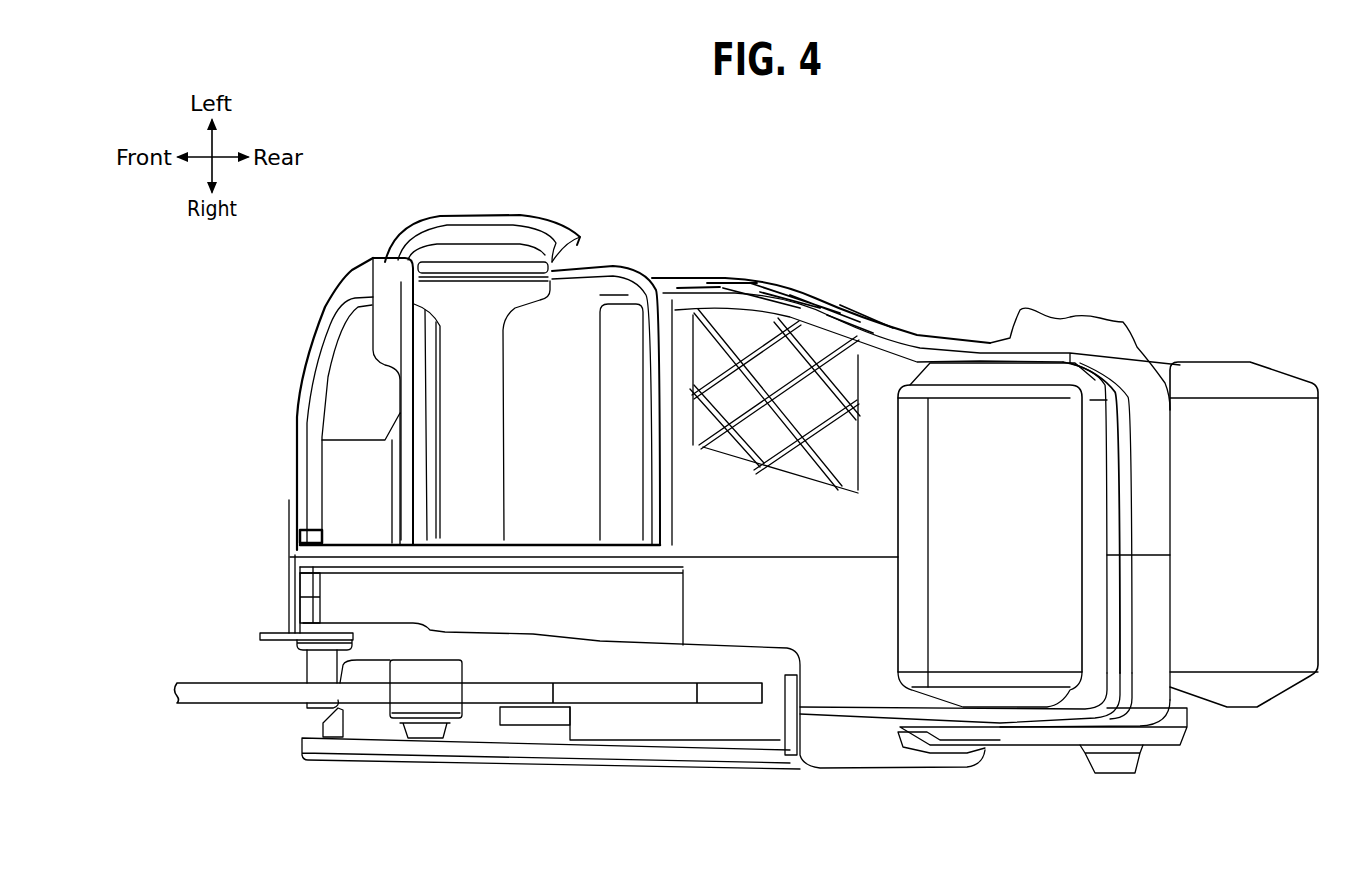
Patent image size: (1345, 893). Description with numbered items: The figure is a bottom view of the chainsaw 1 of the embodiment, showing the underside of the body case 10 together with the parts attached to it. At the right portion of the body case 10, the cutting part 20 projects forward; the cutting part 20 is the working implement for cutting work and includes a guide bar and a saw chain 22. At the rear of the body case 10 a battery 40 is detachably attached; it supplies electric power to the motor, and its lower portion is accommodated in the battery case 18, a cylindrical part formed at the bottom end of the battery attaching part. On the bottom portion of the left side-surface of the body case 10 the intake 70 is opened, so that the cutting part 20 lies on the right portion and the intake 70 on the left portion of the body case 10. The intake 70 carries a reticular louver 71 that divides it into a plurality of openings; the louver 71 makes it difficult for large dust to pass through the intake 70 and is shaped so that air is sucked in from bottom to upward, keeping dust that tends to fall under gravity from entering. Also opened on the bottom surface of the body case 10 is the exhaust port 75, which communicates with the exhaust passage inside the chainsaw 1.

The chainsaw 1 is at (553, 173).
The body case 10 is at (667, 287).
The battery case 18 is at (1160, 632).
The cutting part 20 is at (212, 669).
The saw chain 22 is at (215, 697).
The battery 40 is at (1225, 377).
The intake 70 is at (857, 293).
The louver 71 is at (806, 300).
The exhaust port 75 is at (870, 378).